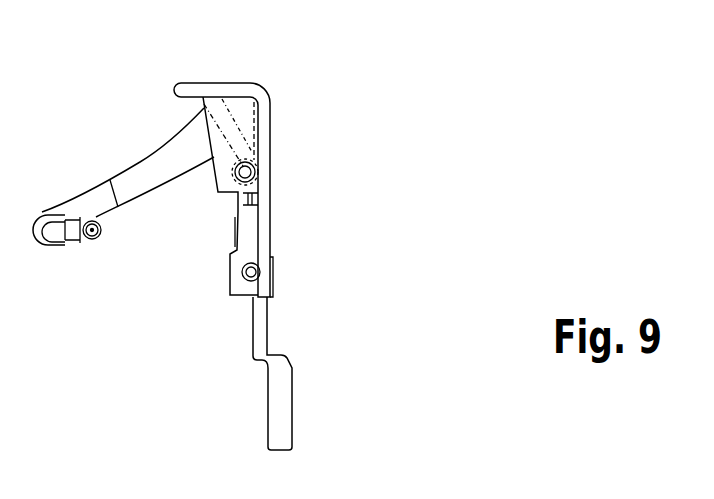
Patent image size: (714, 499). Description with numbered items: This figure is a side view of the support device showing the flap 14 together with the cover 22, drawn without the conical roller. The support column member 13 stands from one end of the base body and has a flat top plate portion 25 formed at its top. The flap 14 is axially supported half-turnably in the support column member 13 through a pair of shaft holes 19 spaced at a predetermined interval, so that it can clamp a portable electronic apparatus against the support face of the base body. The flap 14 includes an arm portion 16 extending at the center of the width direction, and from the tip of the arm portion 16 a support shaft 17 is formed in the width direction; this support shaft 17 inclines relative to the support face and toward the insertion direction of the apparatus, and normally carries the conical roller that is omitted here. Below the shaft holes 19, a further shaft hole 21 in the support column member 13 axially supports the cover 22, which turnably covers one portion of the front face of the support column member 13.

The support column member 13 is at (264, 135).
The flap 14 is at (117, 172).
The arm portion 16 is at (148, 183).
The support shaft 17 is at (66, 231).
The shaft hole 19 is at (252, 176).
The shaft hole 21 is at (253, 272).
The cover 22 is at (282, 392).
The flat top plate portion 25 is at (210, 86).